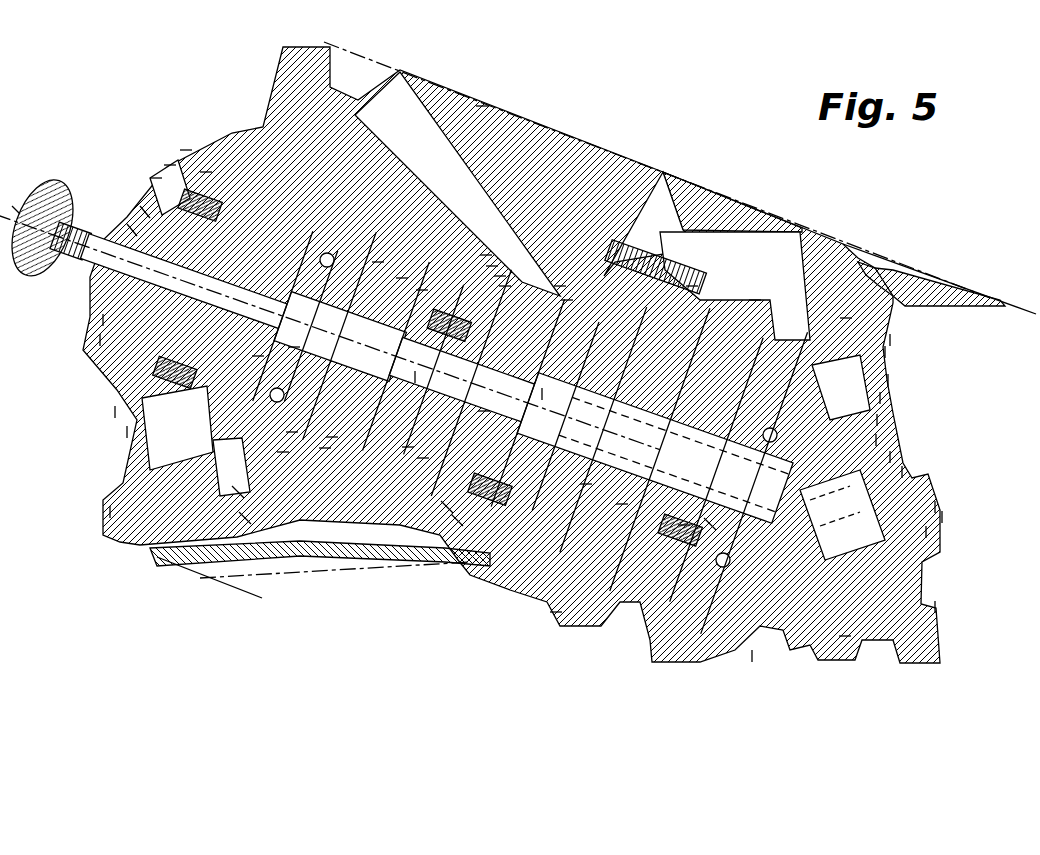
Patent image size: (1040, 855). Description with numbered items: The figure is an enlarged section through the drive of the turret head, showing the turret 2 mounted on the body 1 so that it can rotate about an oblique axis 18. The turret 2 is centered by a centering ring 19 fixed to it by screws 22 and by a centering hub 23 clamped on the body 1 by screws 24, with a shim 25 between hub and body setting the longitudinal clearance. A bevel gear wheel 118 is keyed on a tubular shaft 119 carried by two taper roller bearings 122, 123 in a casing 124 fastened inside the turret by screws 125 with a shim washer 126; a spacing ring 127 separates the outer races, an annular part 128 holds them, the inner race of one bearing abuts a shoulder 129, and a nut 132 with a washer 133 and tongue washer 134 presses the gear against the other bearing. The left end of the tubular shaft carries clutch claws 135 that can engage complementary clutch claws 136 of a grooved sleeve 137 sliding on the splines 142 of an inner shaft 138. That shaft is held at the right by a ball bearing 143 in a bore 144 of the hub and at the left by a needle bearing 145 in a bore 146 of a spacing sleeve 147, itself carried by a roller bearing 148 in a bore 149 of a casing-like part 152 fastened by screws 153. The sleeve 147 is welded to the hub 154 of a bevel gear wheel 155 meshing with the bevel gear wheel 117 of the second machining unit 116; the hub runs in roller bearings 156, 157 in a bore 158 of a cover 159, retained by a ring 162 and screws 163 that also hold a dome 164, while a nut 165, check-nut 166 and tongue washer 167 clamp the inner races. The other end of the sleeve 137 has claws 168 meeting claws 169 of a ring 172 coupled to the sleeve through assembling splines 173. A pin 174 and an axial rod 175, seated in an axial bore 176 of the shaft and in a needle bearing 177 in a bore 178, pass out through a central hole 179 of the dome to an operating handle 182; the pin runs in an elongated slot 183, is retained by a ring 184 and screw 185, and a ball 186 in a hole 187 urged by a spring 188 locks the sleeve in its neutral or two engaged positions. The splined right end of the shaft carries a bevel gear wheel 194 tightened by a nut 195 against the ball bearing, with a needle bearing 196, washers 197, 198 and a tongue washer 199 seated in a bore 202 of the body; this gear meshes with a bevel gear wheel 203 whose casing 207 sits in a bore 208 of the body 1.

The body 1 is at (930, 287).
The turret 2 is at (692, 192).
The axis 18 is at (16, 210).
The centering ring 19 is at (888, 380).
The screws 22 is at (716, 292).
The centering hub 23 is at (885, 352).
The screws 24 is at (890, 340).
The shim 25 is at (846, 318).
The second machining unit 116 is at (482, 106).
The bevel gear wheel 117 is at (560, 286).
The bevel gear wheel 118 is at (755, 300).
The tubular shaft 119 is at (655, 448).
The taper roller bearing 122 is at (447, 507).
The taper roller bearing 123 is at (622, 504).
The casing 124 is at (457, 520).
The screws 125 is at (612, 284).
The shim washer 126 is at (692, 286).
The spacing ring 127 is at (586, 484).
The annular part 128 is at (556, 612).
The shoulder 129 is at (567, 300).
The nut 132 is at (710, 524).
The washer 133 is at (670, 525).
The tongue washer 134 is at (684, 525).
The clutch claws 135 is at (433, 472).
The clutch claws 136 is at (423, 458).
The sleeve 137 is at (408, 447).
The shaft 138 is at (542, 394).
The splines 142 is at (332, 437).
The ball bearing 143 is at (876, 440).
The bore 144 is at (880, 398).
The needle bearing 145 is at (292, 432).
The bore 146 is at (325, 448).
The sleeve 147 is at (282, 342).
The roller bearing 148 is at (373, 214).
The bore 149 is at (283, 452).
The casing-like part 152 is at (245, 518).
The screws 153 is at (110, 512).
The hub 154 is at (258, 356).
The bevel gear wheel 155 is at (238, 492).
The roller bearing 156 is at (100, 340).
The roller bearing 157 is at (115, 412).
The bore 158 is at (177, 428).
The cover 159 is at (127, 432).
The ring 162 is at (206, 172).
The screws 163 is at (92, 368).
The dome 164 is at (170, 165).
The nut 165 is at (186, 150).
The check-nut 166 is at (156, 178).
The tongue washer 167 is at (103, 320).
The claws 168 is at (430, 284).
The claws 169 is at (402, 278).
The ring 172 is at (378, 262).
The assembling splines 173 is at (294, 347).
The pin 174 is at (415, 377).
The rod 175 is at (340, 337).
The axial bore 176 is at (487, 400).
The needle bearing 177 is at (145, 212).
The bore 178 is at (97, 284).
The central hole 179 is at (132, 230).
The operating handle 182 is at (66, 190).
The elongated slot 183 is at (461, 382).
The ring 184 is at (437, 308).
The screw 185 is at (505, 286).
The ball 186 is at (500, 276).
The hole 187 is at (486, 255).
The spring 188 is at (492, 266).
The bevel gear wheel 194 is at (877, 420).
The nut 195 is at (926, 532).
The needle bearing 196 is at (830, 550).
The washer 197 is at (890, 457).
The washer 198 is at (935, 507).
The tongue washer 199 is at (942, 517).
The bore 202 is at (902, 472).
The bevel gear wheel 203 is at (752, 656).
The casing 207 is at (935, 607).
The bore 208 is at (845, 636).